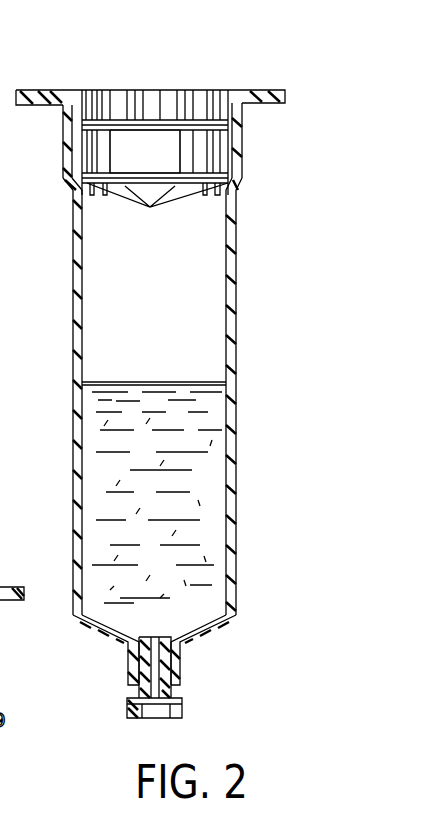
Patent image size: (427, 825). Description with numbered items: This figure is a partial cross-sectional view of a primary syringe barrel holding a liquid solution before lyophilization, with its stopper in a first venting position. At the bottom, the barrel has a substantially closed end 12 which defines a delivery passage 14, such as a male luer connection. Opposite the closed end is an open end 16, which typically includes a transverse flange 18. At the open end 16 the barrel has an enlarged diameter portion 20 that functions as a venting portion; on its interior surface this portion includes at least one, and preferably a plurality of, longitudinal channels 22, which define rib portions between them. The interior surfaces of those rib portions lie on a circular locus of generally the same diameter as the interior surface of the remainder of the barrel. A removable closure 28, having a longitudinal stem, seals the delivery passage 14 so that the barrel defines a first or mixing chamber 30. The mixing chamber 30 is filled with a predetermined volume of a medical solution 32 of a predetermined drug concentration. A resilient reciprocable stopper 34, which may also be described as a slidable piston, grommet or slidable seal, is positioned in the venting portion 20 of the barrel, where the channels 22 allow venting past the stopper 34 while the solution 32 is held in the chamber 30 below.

The closed end 12 is at (213, 634).
The delivery passage 14 is at (152, 688).
The open end 16 is at (223, 73).
The transverse flange 18 is at (268, 90).
The enlarged diameter portion 20 is at (244, 124).
The longitudinal channel 22 is at (243, 180).
The removable closure 28 is at (135, 717).
The mixing chamber 30 is at (206, 333).
The medical solution 32 is at (210, 452).
The reciprocable stopper 34 is at (135, 148).